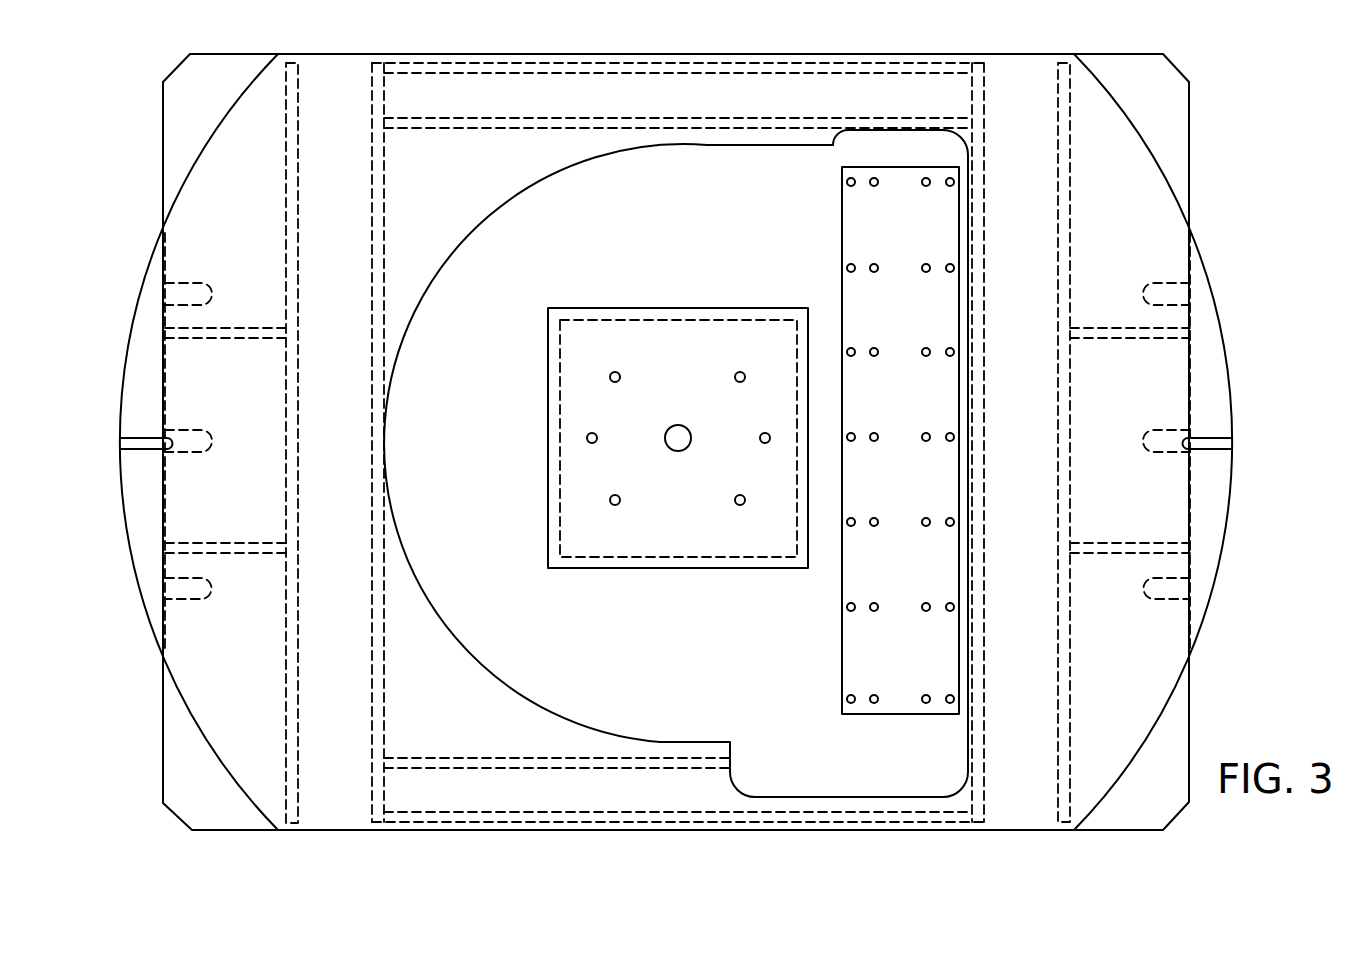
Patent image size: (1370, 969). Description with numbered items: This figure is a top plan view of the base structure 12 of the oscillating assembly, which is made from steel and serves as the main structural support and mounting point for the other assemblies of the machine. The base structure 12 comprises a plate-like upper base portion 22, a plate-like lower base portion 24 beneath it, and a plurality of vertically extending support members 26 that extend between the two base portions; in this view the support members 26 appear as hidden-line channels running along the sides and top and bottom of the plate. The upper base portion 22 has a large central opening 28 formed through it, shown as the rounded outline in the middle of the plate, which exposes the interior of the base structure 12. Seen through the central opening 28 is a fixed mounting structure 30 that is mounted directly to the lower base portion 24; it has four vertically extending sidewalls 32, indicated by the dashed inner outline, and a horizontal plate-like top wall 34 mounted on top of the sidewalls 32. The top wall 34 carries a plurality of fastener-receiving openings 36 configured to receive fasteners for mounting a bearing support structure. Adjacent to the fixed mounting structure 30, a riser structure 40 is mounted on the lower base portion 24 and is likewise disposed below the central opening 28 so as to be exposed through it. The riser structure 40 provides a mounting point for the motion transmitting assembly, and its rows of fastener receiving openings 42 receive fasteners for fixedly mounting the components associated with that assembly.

The base structure 12 is at (1222, 160).
The upper base portion 22 is at (1213, 360).
The lower base portion 24 is at (218, 810).
The vertically extending support members 26 is at (512, 70).
The central opening 28 is at (823, 773).
The fixed mounting structure 30 is at (633, 306).
The sidewalls 32 is at (557, 436).
The top wall 34 is at (730, 548).
The fastener-receiving openings 36 is at (621, 377).
The riser structure 40 is at (863, 661).
The fastener receiving openings 42 is at (871, 188).